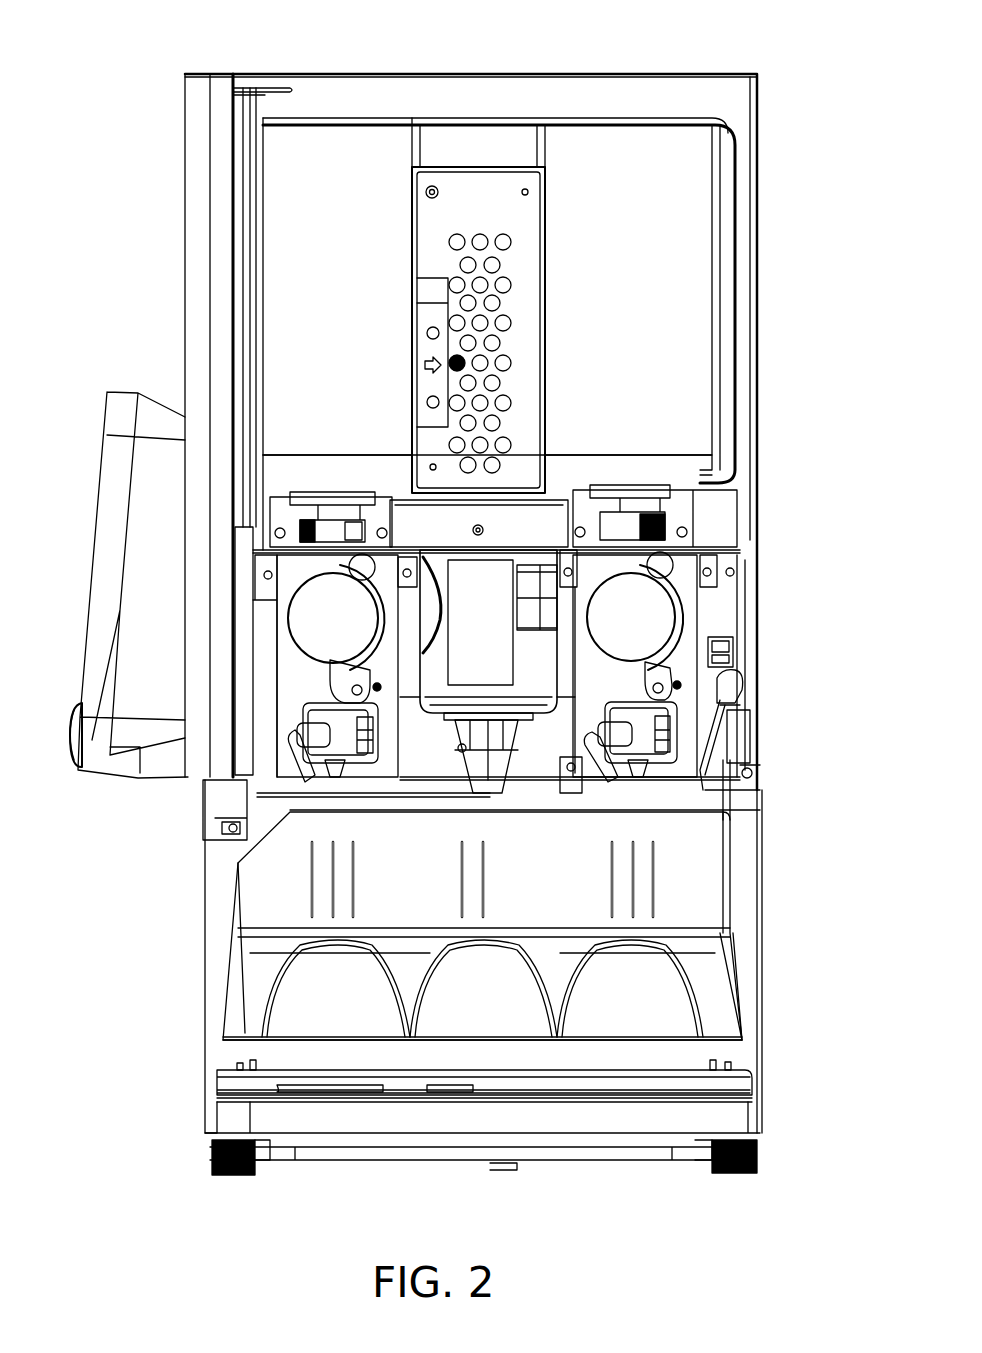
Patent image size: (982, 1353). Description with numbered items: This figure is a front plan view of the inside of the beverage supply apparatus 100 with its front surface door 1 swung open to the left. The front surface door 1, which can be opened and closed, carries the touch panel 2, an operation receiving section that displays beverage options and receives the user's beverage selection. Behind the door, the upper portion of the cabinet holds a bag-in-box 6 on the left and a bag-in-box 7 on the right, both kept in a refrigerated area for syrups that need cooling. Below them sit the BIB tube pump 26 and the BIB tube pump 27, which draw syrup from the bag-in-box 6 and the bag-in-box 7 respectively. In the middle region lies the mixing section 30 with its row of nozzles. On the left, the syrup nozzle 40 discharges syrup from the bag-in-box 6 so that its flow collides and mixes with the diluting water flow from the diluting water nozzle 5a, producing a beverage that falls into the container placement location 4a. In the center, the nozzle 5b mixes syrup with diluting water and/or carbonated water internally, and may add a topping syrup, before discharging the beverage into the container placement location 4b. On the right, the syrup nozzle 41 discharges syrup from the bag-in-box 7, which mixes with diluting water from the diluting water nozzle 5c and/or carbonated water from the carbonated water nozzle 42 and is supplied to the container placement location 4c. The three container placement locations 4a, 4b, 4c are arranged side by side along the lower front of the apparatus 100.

The beverage supply apparatus 100 is at (696, 31).
The front surface door 1 is at (185, 222).
The touch panel 2 is at (110, 503).
The bag-in-box 6 is at (290, 290).
The bag-in-box 7 is at (665, 278).
The BIB tube pump 26 is at (322, 617).
The BIB tube pump 27 is at (640, 613).
The mixing section 30 is at (473, 805).
The syrup nozzle 40 is at (320, 785).
The syrup nozzle 41 is at (633, 770).
The carbonated water nozzle 42 is at (745, 776).
The diluting water nozzle 5a is at (290, 790).
The nozzle 5b is at (503, 797).
The diluting water nozzle 5c is at (622, 785).
The container placement location 4a is at (293, 990).
The container placement location 4b is at (433, 1030).
The container placement location 4c is at (672, 977).